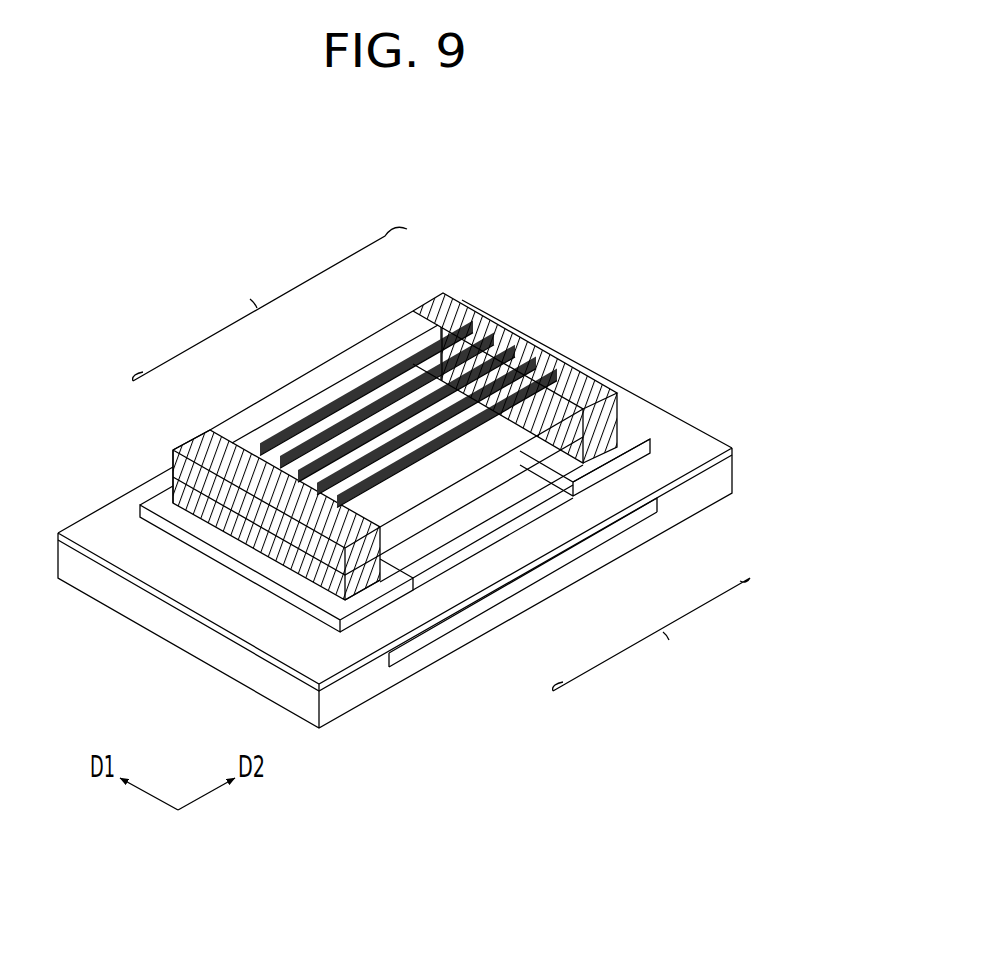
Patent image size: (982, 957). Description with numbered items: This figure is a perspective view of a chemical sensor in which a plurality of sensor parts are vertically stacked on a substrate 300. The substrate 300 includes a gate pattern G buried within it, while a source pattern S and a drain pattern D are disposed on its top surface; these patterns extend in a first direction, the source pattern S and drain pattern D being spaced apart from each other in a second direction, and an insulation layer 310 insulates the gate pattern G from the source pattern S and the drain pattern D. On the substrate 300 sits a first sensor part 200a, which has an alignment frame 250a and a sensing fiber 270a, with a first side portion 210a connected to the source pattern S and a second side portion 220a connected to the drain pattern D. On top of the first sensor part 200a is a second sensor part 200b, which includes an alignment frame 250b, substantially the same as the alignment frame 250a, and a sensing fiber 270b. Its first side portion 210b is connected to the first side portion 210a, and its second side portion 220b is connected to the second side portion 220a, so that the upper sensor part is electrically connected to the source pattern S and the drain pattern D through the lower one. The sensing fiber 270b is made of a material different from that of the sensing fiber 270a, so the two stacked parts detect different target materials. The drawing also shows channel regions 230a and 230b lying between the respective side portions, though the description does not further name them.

The first sensor part 200a is at (171, 478).
The second sensor part 200b is at (171, 457).
The first side portion 210a is at (410, 563).
The first side portion 210b is at (207, 443).
The second side portion 220a is at (612, 452).
The second side portion 220b is at (441, 314).
The first channel region 230a is at (517, 490).
The second channel region (nanowires) 230b is at (323, 380).
The alignment frame 250a is at (651, 634).
The alignment frame 250b is at (270, 304).
The sensing fiber 270a is at (525, 408).
The sensing fiber 270b is at (500, 328).
The substrate 300 is at (721, 478).
The insulation layer 310 is at (738, 449).
The drain pattern D is at (593, 445).
The source pattern S is at (388, 600).
The gate pattern G is at (410, 647).